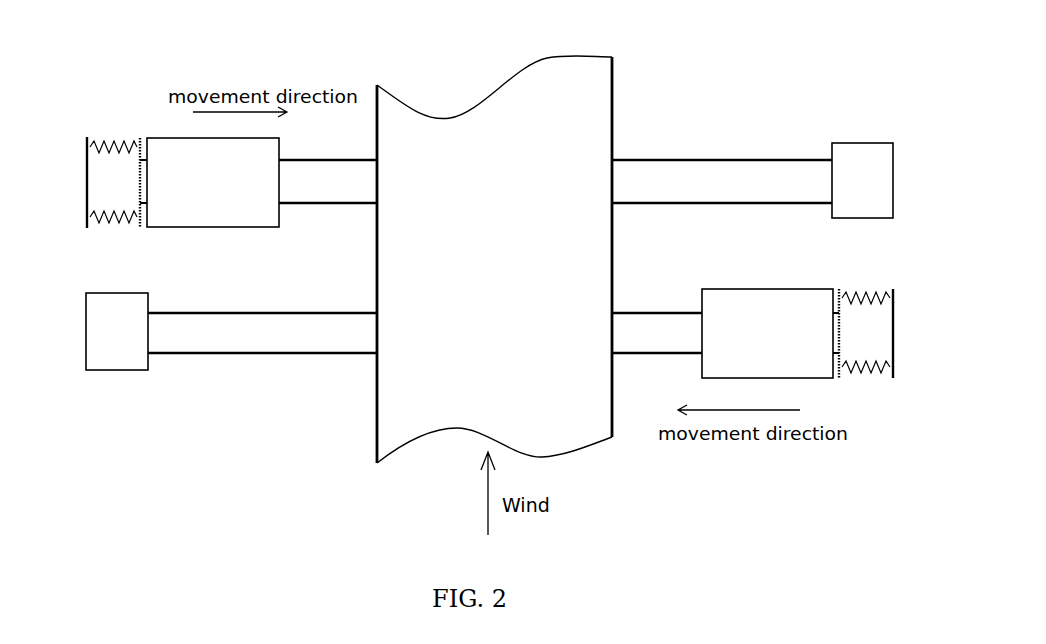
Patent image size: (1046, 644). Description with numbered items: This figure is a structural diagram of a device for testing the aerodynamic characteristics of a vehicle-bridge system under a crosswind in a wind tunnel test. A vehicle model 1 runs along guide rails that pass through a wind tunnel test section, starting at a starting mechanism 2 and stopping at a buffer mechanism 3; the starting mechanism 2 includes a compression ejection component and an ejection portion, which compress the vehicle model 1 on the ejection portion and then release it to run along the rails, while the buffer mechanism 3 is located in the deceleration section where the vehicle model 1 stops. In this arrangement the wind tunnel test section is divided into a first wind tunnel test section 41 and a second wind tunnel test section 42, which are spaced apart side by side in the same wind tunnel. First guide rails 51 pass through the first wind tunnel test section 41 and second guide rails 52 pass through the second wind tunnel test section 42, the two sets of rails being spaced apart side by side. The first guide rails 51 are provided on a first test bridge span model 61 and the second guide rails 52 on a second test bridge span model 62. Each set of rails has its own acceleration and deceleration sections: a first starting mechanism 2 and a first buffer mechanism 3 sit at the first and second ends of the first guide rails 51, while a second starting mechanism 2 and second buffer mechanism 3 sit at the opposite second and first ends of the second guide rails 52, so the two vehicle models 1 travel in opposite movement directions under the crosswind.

The vehicle model 1 is at (168, 148).
The starting mechanism 2 is at (90, 130).
The buffer mechanism 3 is at (885, 139).
The first wind tunnel test section 41 is at (575, 142).
The second wind tunnel test section 42 is at (410, 358).
The first guide rails 51 is at (757, 160).
The second guide rails 52 is at (195, 355).
The first test bridge span model 61 is at (668, 178).
The second test bridge span model 62 is at (255, 335).